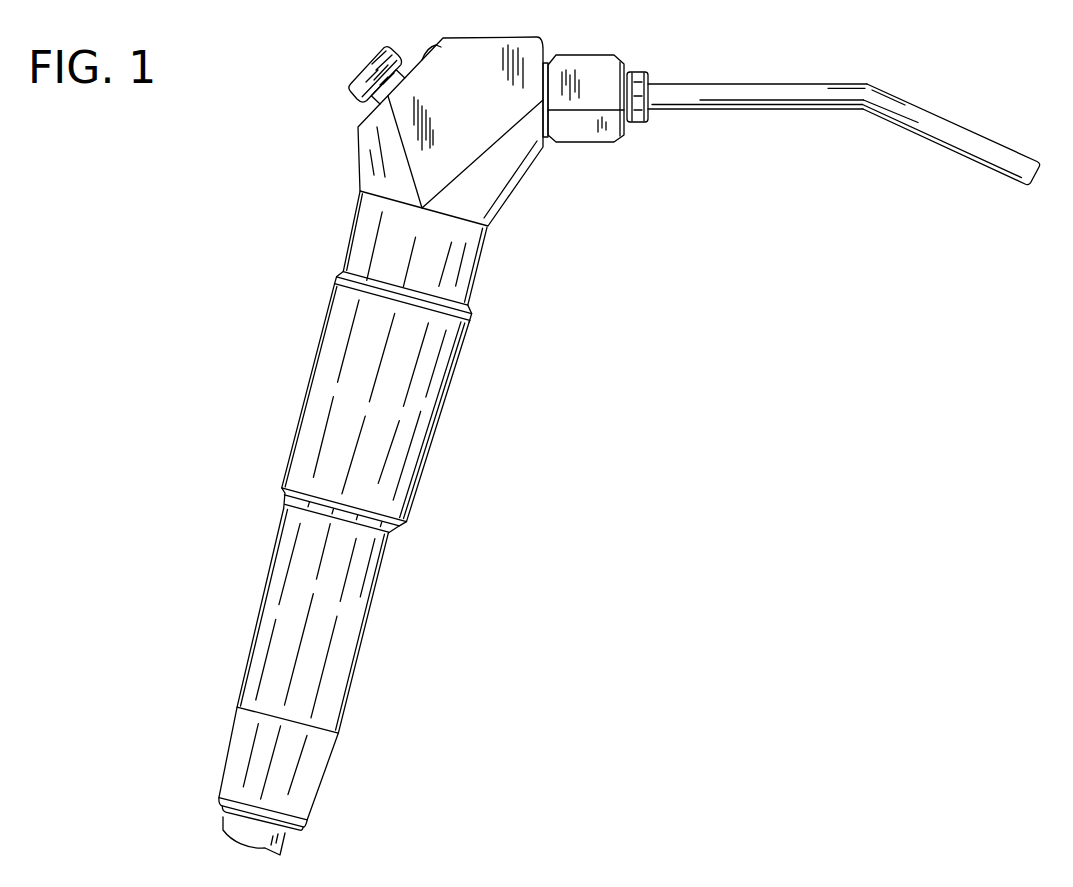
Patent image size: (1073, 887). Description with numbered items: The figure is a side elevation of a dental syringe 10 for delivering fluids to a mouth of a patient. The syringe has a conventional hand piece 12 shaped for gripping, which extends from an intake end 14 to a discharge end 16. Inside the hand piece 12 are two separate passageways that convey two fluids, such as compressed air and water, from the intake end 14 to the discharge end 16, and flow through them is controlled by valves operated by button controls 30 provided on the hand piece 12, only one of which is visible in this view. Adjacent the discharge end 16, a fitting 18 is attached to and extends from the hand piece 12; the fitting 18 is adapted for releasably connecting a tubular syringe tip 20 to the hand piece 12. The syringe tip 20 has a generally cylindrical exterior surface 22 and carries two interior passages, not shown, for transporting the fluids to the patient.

The dental syringe 10 is at (256, 256).
The hand piece 12 is at (306, 392).
The intake end 14 is at (222, 818).
The discharge end 16 is at (544, 55).
The fitting 18 is at (615, 46).
The syringe tip 20 is at (841, 74).
The exterior surface 22 is at (707, 82).
The button controls 30 is at (362, 61).